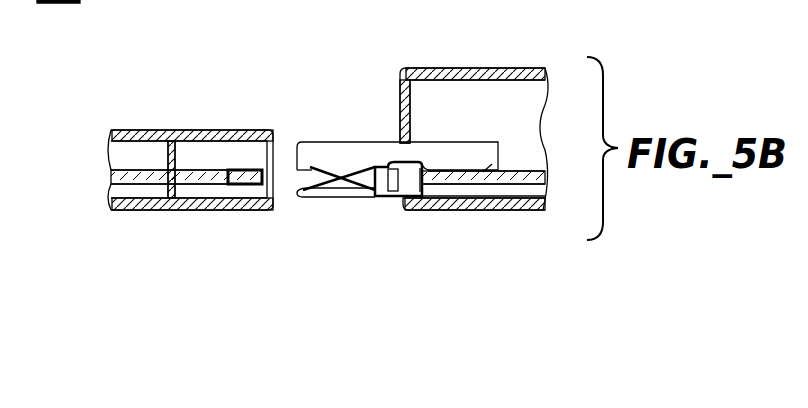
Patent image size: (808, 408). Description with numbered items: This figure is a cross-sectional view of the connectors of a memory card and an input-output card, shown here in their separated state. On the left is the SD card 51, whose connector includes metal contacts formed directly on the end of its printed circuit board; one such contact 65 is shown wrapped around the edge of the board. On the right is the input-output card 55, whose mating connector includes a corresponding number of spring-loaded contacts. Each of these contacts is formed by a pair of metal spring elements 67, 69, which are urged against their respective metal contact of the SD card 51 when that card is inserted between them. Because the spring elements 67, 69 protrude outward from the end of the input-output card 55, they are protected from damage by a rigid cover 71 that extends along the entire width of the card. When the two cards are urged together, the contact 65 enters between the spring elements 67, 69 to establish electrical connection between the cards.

The SD card 51 is at (176, 209).
The input-output card 55 is at (465, 210).
The contact 65 is at (258, 192).
The metal spring element 67 is at (383, 164).
The metal spring element 69 is at (340, 188).
The rigid cover 71 is at (314, 150).